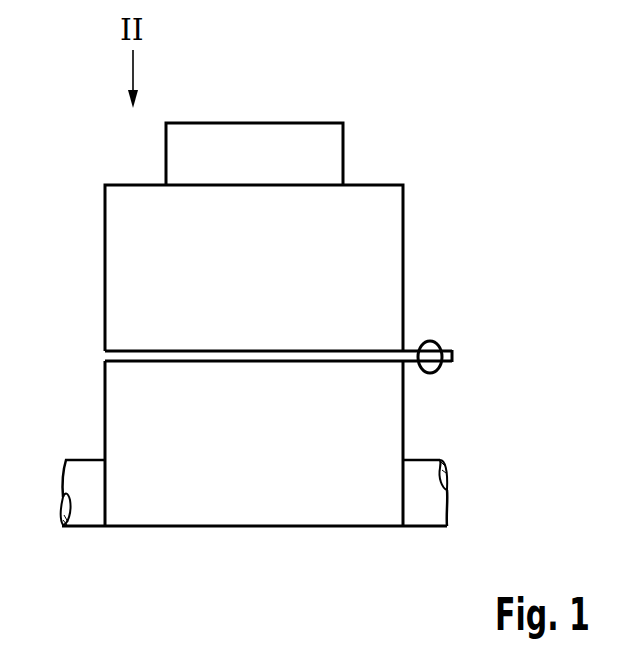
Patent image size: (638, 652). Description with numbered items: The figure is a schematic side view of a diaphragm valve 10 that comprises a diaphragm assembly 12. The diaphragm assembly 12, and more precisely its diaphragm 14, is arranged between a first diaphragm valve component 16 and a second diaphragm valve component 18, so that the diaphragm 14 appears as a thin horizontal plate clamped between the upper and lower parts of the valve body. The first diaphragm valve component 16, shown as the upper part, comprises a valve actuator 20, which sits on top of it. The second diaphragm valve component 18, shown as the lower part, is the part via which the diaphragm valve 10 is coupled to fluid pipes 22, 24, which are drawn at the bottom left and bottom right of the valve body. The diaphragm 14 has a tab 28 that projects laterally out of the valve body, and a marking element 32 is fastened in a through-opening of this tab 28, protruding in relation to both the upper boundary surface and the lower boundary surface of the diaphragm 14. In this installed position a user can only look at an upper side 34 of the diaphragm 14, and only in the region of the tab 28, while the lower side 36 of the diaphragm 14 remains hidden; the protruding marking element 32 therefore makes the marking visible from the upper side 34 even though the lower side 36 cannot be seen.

The diaphragm valve 10 is at (448, 133).
The diaphragm assembly 12 is at (450, 333).
The diaphragm 14 is at (118, 355).
The first diaphragm valve component 16 is at (118, 225).
The second diaphragm valve component 18 is at (118, 430).
The valve actuator 20 is at (307, 132).
The fluid pipe 22 is at (84, 512).
The fluid pipe 24 is at (418, 512).
The tab 28 is at (455, 357).
The marking element 32 is at (430, 342).
The upper side 34 is at (147, 350).
The lower side 36 is at (150, 362).